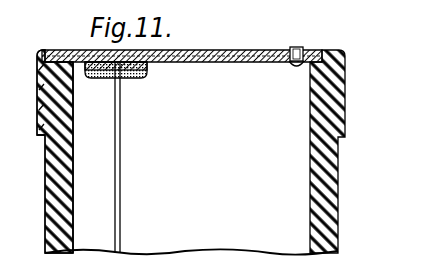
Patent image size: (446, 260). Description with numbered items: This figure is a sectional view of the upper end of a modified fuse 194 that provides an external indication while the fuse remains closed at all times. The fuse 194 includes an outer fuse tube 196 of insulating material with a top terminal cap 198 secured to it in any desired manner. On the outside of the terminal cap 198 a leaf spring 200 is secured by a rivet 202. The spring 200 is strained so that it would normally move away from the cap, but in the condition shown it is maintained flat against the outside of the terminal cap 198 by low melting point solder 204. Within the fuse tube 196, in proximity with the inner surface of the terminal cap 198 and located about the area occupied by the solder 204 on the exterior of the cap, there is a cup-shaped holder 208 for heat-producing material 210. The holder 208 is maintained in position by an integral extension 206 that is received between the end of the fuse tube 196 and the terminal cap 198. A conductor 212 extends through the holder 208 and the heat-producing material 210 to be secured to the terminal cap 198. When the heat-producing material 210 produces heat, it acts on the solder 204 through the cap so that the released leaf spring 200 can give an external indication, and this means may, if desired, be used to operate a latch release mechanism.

The fuse 194 is at (212, 156).
The outer fuse tube 196 is at (339, 217).
The top terminal cap 198 is at (340, 49).
The leaf spring 200 is at (228, 49).
The rivet 202 is at (297, 48).
The low melting point solder 204 is at (97, 52).
The integral extension 206 is at (80, 70).
The cup-shaped holder 208 is at (138, 78).
The heat-producing material 210 is at (146, 69).
The conductor 212 is at (121, 196).